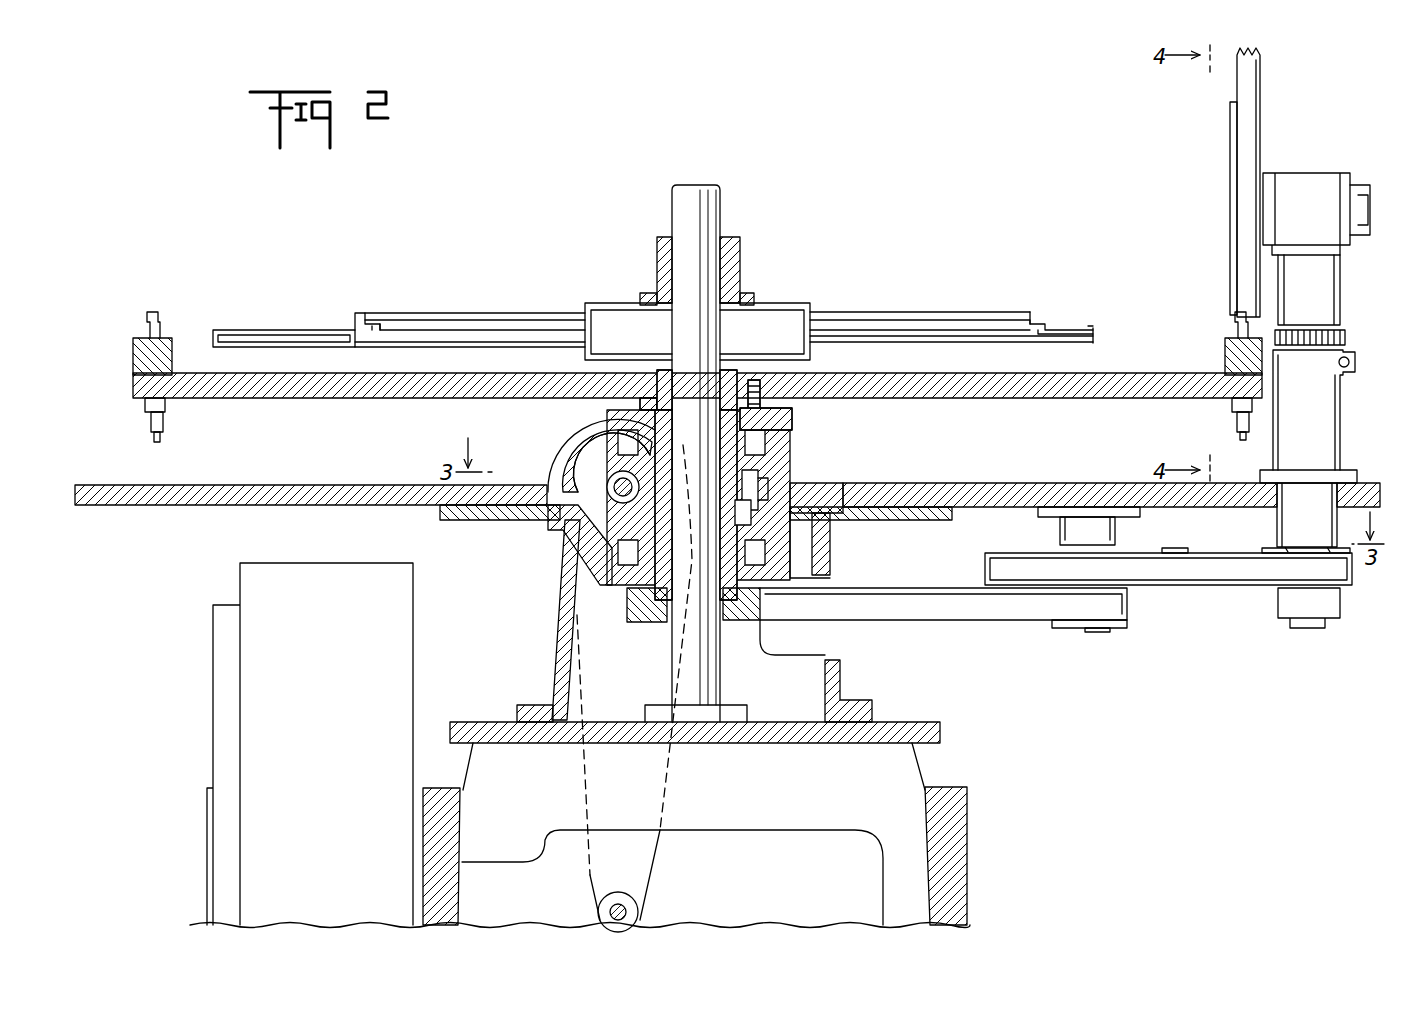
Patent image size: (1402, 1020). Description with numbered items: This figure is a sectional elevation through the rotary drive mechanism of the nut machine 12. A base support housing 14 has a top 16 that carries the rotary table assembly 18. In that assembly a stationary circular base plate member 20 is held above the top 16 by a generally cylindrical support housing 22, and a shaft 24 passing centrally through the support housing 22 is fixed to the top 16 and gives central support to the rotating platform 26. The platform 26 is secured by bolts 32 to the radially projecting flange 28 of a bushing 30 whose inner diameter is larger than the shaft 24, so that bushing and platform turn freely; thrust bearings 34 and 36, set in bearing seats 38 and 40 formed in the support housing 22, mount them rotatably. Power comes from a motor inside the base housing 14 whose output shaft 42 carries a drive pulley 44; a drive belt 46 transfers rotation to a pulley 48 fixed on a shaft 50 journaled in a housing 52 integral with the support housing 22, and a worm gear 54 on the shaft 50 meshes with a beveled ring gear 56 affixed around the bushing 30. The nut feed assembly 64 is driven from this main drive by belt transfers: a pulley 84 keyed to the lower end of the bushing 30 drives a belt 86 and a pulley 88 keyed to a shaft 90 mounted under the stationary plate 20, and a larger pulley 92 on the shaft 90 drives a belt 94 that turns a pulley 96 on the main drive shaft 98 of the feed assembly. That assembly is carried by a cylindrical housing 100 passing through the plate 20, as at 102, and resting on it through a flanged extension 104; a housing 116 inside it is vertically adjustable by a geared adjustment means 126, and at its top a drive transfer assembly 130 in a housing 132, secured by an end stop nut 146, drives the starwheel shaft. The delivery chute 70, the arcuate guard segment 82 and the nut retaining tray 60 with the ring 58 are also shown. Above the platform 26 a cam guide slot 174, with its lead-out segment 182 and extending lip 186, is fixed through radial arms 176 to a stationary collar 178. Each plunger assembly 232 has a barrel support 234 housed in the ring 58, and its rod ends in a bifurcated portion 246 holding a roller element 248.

The nut machine 12 is at (275, 228).
The base support housing 14 is at (950, 860).
The top 16 is at (490, 722).
The rotary table assembly 18 is at (160, 530).
The stationary circular base plate member 20 is at (315, 487).
The support housing 22 is at (558, 636).
The shaft 24 is at (700, 210).
The rotating platform 26 is at (350, 393).
The radially projecting flange 28 is at (647, 398).
The bushing 30 is at (733, 375).
The bolts 32 is at (756, 380).
The thrust bearing 34 is at (735, 445).
The thrust bearing 36 is at (738, 520).
The bearing seat 38 is at (785, 422).
The bearing seat 40 is at (780, 542).
The output shaft 42 is at (640, 912).
The drive pulley 44 is at (618, 904).
The drive belt 46 is at (634, 838).
The pulley 48 is at (580, 447).
The shaft 50 is at (620, 497).
The housing 52 is at (580, 470).
The worm gear 54 is at (617, 475).
The beveled ring gear 56 is at (768, 490).
The ring 58 is at (136, 352).
The nut retaining tray 60 is at (150, 322).
The nut feed assembly 64 is at (1215, 150).
The delivery chute 70 is at (1260, 68).
The arcuate guard segment 82 is at (1232, 200).
The pulley 84 is at (744, 612).
The belt 86 is at (944, 618).
The pulley 88 is at (1060, 628).
The shaft 90 is at (1095, 632).
The pulley 92 is at (1173, 550).
The belt 94 is at (1218, 582).
The pulley 96 is at (1270, 553).
The main drive shaft 98 is at (1305, 630).
The cylindrical housing 100 is at (1335, 420).
The plate opening location 102 is at (1275, 497).
The flanged extension 104 is at (1352, 475).
The housing 116 is at (1325, 285).
The geared adjustment means 126 is at (1345, 338).
The drive transfer assembly 130 is at (1329, 217).
The housing 132 is at (1305, 185).
The end stop nut 146 is at (1365, 190).
The cam guide slot 174 is at (322, 325).
The radial arms 176 is at (498, 313).
The stationary collar 178 is at (758, 303).
The lead-out segment 182 is at (240, 330).
The extending lip 186 is at (1095, 335).
The plunger assembly 232 is at (699, 422).
The barrel support 234 is at (168, 405).
The bifurcated portion 246 is at (165, 425).
The roller element 248 is at (158, 440).